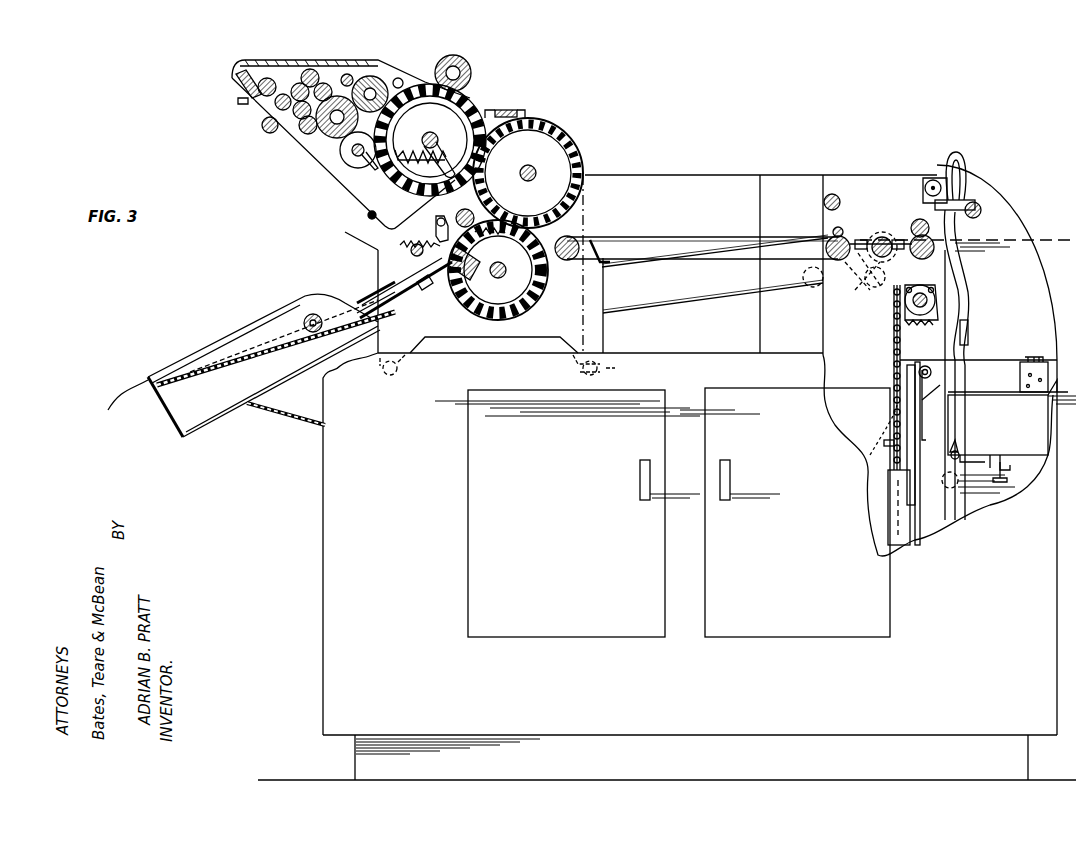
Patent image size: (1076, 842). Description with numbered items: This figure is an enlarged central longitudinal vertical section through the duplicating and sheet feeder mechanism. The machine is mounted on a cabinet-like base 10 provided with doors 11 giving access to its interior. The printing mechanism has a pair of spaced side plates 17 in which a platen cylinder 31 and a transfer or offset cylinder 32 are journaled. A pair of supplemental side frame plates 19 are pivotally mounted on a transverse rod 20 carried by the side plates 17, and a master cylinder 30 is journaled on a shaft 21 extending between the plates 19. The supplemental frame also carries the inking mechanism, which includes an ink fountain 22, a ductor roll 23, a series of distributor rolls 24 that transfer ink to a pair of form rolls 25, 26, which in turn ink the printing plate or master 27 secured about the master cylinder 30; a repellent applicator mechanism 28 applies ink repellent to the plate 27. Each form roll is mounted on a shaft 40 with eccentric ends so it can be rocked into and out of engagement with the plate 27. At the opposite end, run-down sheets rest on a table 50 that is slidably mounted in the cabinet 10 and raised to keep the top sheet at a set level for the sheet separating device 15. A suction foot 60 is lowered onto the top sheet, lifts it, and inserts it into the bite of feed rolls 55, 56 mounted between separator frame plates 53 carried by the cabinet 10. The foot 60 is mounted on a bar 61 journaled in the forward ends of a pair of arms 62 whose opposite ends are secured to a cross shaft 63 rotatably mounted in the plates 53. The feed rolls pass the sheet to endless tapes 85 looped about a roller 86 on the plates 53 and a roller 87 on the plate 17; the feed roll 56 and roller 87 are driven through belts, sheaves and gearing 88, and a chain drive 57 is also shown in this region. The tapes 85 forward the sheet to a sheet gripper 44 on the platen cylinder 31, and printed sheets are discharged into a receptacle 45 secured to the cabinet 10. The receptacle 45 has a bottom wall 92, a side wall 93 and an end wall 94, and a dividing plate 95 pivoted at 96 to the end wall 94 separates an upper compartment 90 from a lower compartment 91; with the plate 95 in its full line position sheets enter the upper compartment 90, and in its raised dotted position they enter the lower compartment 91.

The cabinet-like frame or base 10 is at (330, 448).
The doors 11 is at (478, 469).
The sheet separating device 15 is at (1028, 241).
The side plates or frames 17 is at (504, 270).
The supplemental side frame members or plates 19 is at (313, 188).
The transverse rod 20 is at (367, 215).
The shaft 21 is at (445, 132).
The ink fountain 22 is at (234, 86).
The ductor roll 23 is at (276, 108).
The distributor rolls 24 is at (300, 140).
The form roll 25 is at (380, 84).
The form roll 26 is at (352, 150).
The printing plate or master 27 is at (466, 110).
The repellent applicator mechanism 28 is at (462, 58).
The master or form cylinder 30 is at (500, 112).
The platen cylinder 31 is at (462, 302).
The transfer or offset cylinder 32 is at (565, 122).
The shaft 40 is at (368, 90).
The sheet gripper 44 is at (447, 220).
The discharge receptacle 45 is at (245, 322).
The table or platform 50 is at (949, 455).
The separator frame plates 53 is at (872, 190).
The feed roll 55 is at (913, 222).
The feed roll 56 is at (912, 240).
The chain drive 57 is at (914, 415).
The suction foot 60 is at (962, 232).
The bar 61 is at (983, 208).
The arms 62 is at (960, 205).
The cross shaft 63 is at (928, 178).
The endless tapes 85 is at (670, 228).
The roller 86 is at (830, 240).
The roller 87 is at (580, 243).
The driving components 88 is at (626, 260).
The upper compartment 90 is at (220, 345).
The lower compartment 91 is at (175, 410).
The bottom wall 92 is at (228, 412).
The side wall 93 is at (178, 366).
The end wall 94 is at (146, 378).
The dividing plate 95 is at (256, 356).
The pivot 96 is at (119, 409).